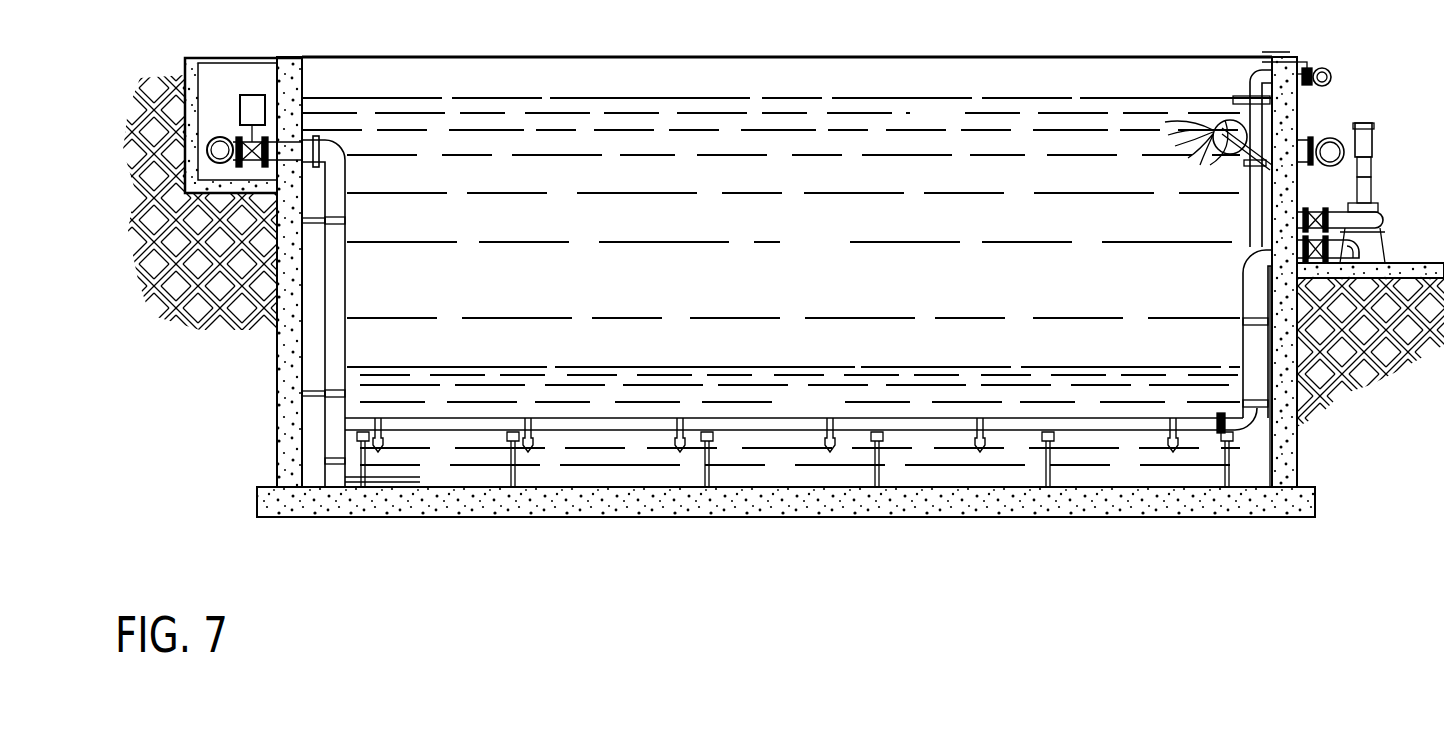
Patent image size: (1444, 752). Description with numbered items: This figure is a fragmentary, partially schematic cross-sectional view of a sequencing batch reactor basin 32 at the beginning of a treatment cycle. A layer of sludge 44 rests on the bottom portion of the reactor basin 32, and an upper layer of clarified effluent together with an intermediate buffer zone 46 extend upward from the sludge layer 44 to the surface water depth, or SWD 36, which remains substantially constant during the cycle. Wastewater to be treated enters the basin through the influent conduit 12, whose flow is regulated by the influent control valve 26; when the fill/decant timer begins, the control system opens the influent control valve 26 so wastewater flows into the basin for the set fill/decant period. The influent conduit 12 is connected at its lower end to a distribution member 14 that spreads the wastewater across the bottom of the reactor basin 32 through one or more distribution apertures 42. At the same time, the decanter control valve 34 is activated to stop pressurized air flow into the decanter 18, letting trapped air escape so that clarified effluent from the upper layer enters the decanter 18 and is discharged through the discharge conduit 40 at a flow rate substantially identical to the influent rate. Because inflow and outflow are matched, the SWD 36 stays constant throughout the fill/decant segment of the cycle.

The influent conduit 12 is at (335, 208).
The distribution member 14 is at (352, 432).
The decanter 18 is at (1230, 125).
The influent control valve 26 is at (265, 148).
The sequencing batch reactor basin 32 is at (637, 90).
The decanter control valve 34 is at (1278, 52).
The surface water depth (SWD) 36 is at (787, 106).
The discharge conduit 40 is at (1222, 150).
The distribution apertures 42 is at (343, 480).
The sludge layer 44 is at (839, 416).
The clarified effluent and intermediate buffer zone 46 is at (834, 253).